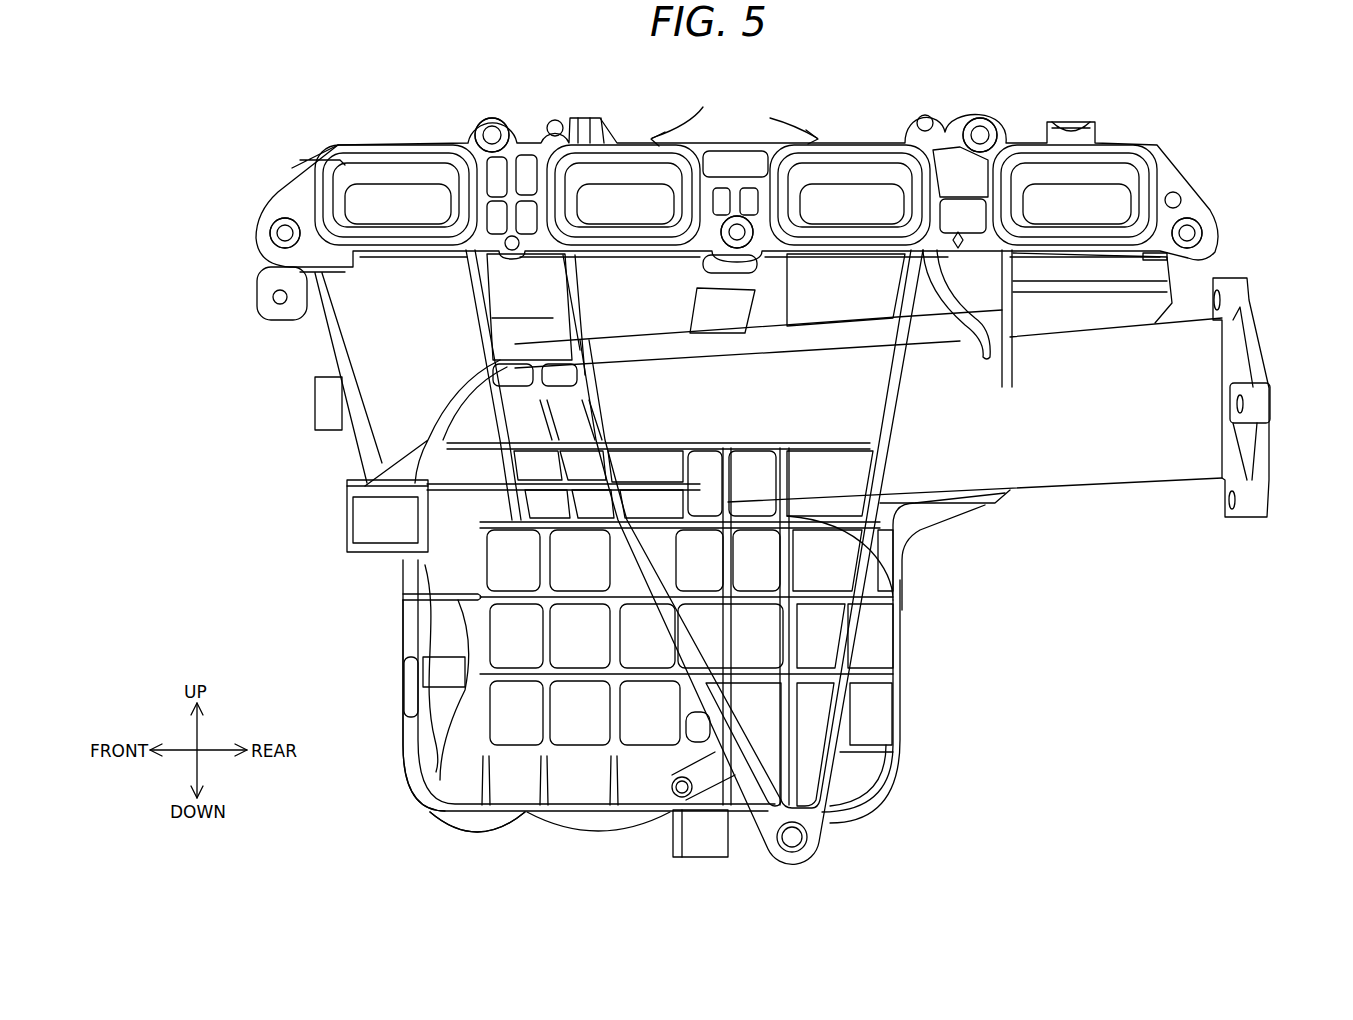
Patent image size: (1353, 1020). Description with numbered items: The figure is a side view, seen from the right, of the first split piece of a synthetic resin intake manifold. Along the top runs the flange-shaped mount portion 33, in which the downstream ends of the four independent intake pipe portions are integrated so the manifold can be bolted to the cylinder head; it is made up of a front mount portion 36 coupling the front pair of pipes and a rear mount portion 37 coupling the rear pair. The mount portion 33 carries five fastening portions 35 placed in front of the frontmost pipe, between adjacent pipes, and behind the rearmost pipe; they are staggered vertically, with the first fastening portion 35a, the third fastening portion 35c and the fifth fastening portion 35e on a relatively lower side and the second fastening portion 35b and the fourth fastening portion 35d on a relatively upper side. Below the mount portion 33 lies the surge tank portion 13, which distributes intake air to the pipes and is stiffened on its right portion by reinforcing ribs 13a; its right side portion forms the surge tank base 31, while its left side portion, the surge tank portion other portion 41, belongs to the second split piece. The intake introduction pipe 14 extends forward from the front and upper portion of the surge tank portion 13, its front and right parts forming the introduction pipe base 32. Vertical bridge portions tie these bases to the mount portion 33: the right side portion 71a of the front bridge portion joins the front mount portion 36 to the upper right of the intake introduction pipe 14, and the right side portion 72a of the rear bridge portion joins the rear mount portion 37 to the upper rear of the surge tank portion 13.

The surge tank portion 13 is at (932, 686).
The reinforcing ribs 13a is at (614, 730).
The intake introduction pipe 14 is at (1156, 498).
The surge tank base 31 is at (437, 780).
The introduction pipe base 32 is at (1053, 464).
The mount portion 33 is at (737, 161).
The fastening portions 35 is at (736, 224).
The first fastening portion 35a is at (1190, 212).
The second fastening portion 35b is at (978, 117).
The third fastening portion 35c is at (697, 256).
The fourth fastening portion 35d is at (490, 117).
The fifth fastening portion 35e is at (283, 216).
The front mount portion 36 is at (787, 120).
The rear mount portion 37 is at (682, 121).
The surge tank portion other portion 41 is at (477, 820).
The right side portion of the front bridge portion 71a is at (950, 310).
The right side portion of the rear bridge portion 72a is at (497, 290).